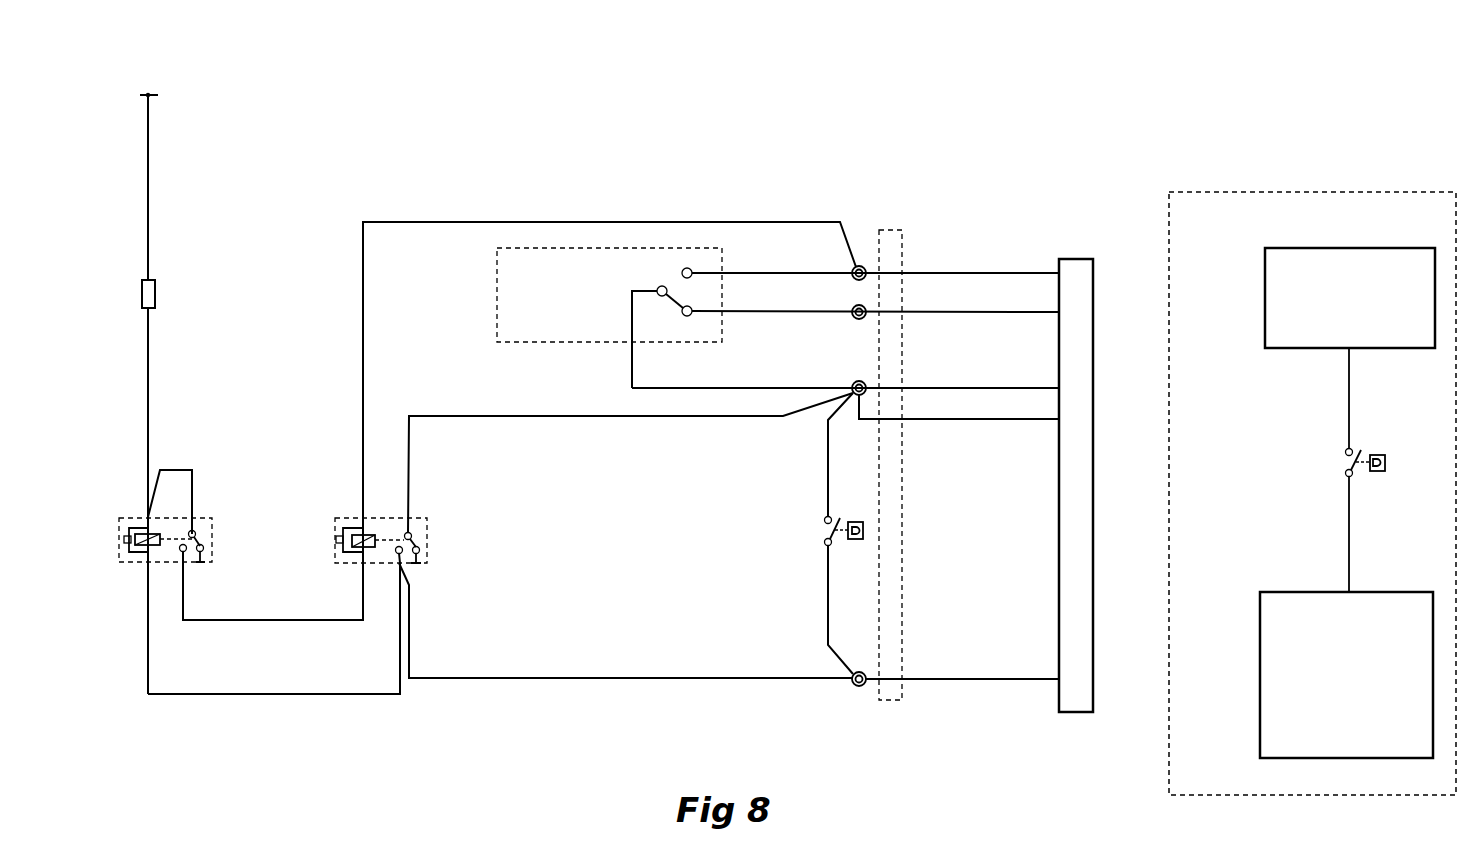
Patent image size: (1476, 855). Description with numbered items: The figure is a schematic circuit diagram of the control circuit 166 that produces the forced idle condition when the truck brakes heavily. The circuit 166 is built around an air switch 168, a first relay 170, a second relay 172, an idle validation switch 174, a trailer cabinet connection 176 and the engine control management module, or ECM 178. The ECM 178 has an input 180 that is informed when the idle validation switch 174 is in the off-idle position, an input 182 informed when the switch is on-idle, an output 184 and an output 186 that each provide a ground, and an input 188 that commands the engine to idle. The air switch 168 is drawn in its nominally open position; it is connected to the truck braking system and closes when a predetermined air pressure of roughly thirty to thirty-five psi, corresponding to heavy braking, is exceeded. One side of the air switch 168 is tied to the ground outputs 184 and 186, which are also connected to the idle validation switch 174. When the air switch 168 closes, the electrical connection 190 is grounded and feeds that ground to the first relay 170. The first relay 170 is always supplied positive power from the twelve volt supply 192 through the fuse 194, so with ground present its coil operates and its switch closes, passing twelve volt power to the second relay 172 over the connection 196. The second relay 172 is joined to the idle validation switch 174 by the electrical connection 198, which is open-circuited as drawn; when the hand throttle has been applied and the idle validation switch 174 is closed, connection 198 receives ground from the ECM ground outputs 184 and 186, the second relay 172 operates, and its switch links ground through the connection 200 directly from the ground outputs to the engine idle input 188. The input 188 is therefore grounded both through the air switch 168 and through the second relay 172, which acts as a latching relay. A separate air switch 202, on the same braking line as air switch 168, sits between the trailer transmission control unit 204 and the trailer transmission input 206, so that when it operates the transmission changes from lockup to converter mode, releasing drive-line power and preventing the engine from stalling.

The control circuit 166 is at (733, 138).
The air switch 168 is at (878, 568).
The first relay 170 is at (212, 538).
The second relay 172 is at (428, 536).
The idle validation switch 174 is at (630, 265).
The trailer cabinet connection 176 is at (905, 243).
The ECM 178 is at (1072, 268).
The input 180 is at (1058, 272).
The input 182 is at (1058, 313).
The output 184 is at (1058, 388).
The output 186 is at (1058, 420).
The input 188 is at (1058, 679).
The electrical connection 190 is at (298, 694).
The 12 Volt supply 192 is at (152, 99).
The fuse 194 is at (156, 295).
The connection 196 is at (258, 620).
The electrical connection 198 is at (410, 222).
The connection 200 is at (490, 416).
The air switch 202 is at (1385, 462).
The trailer transmission control unit 204 is at (1265, 296).
The trailer transmission input 206 is at (1260, 633).